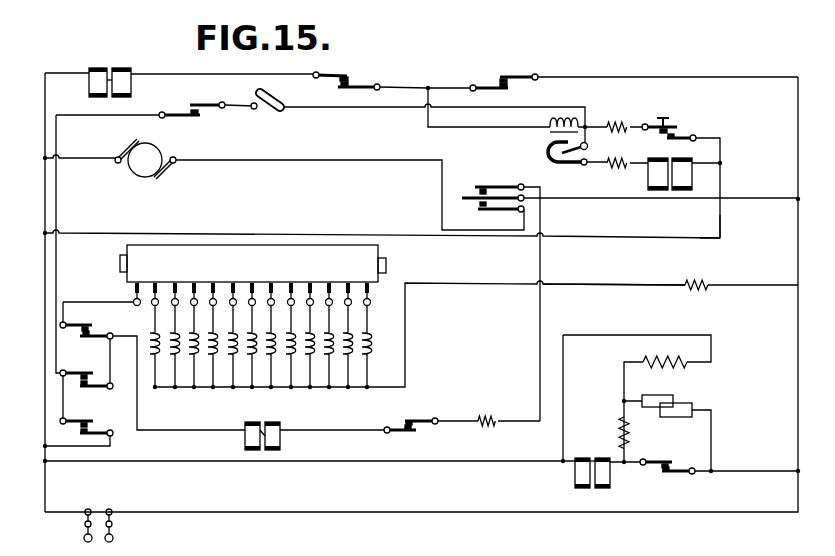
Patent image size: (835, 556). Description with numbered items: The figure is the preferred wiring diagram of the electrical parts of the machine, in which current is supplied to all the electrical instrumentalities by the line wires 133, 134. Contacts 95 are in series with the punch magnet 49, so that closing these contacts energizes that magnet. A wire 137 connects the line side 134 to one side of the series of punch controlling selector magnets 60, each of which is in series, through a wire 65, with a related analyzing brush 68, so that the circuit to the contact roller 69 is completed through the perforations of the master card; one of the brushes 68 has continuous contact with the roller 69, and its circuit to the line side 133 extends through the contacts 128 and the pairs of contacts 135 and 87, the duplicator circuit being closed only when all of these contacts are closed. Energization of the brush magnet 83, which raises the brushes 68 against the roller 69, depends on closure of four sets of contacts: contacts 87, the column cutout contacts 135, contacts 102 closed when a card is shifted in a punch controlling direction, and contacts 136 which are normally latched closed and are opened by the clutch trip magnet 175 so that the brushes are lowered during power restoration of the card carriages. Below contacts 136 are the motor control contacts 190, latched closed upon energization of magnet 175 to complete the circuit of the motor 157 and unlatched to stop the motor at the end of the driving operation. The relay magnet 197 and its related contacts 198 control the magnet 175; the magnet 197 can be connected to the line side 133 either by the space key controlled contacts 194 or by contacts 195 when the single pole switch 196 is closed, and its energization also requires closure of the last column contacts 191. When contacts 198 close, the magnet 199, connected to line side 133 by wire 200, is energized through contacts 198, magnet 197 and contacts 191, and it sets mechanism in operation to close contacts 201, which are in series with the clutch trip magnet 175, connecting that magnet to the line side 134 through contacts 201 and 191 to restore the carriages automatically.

The clutch trip magnet 175 is at (124, 86).
The contacts 195 is at (181, 116).
The single pole switch 196 is at (262, 104).
The motor 157 is at (160, 153).
The contacts 201 is at (355, 80).
The last column contacts 191 is at (500, 82).
The relay magnet 197 is at (565, 125).
The space key controlled contacts 194 is at (690, 126).
The relay contacts 198 is at (545, 150).
The magnet 199 is at (686, 175).
The contacts 136 is at (471, 196).
The motor control contacts 190 is at (474, 206).
The wire 200 is at (712, 239).
The analyzing brushes 68 is at (332, 282).
The contact roller 69 is at (368, 252).
The wire 137 is at (610, 287).
The selector magnets 60 is at (376, 341).
The wire 65 is at (367, 370).
The contacts 128 is at (95, 330).
The column cutout contacts 135 is at (99, 360).
The contacts 87 is at (95, 422).
The contacts 102 is at (401, 420).
The brush magnet 83 is at (282, 438).
The line wire 133 is at (45, 487).
The line wire 134 is at (157, 508).
The punch magnet 49 is at (572, 472).
The contacts 95 is at (678, 463).